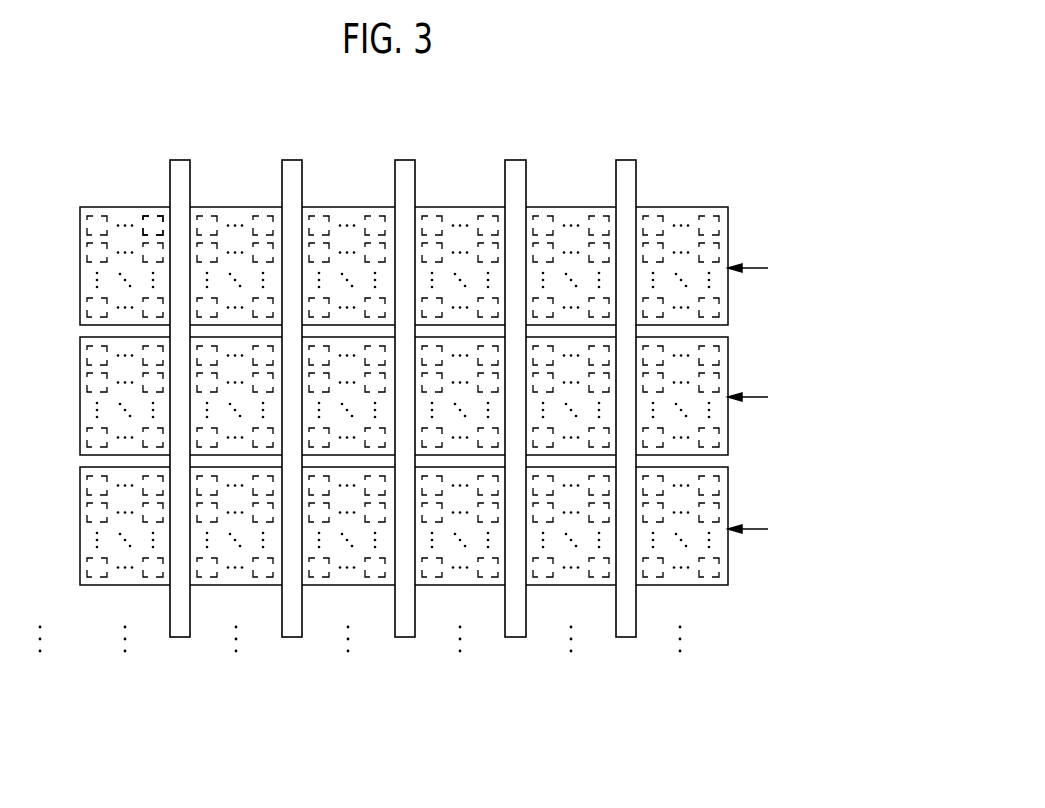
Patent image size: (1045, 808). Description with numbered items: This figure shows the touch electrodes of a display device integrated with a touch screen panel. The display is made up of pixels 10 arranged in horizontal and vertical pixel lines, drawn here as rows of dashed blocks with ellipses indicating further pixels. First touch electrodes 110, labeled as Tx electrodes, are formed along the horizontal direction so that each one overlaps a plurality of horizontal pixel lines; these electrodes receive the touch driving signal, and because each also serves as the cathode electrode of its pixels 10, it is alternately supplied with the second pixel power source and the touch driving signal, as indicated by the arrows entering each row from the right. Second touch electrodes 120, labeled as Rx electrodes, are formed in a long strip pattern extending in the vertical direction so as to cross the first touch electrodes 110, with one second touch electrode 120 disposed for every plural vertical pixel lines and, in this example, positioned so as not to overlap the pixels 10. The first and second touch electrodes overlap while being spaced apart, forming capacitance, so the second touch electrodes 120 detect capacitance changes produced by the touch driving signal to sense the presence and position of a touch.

The pixel 10 is at (148, 212).
The first touch electrode 110 is at (729, 222).
The second touch electrode 120 is at (625, 638).